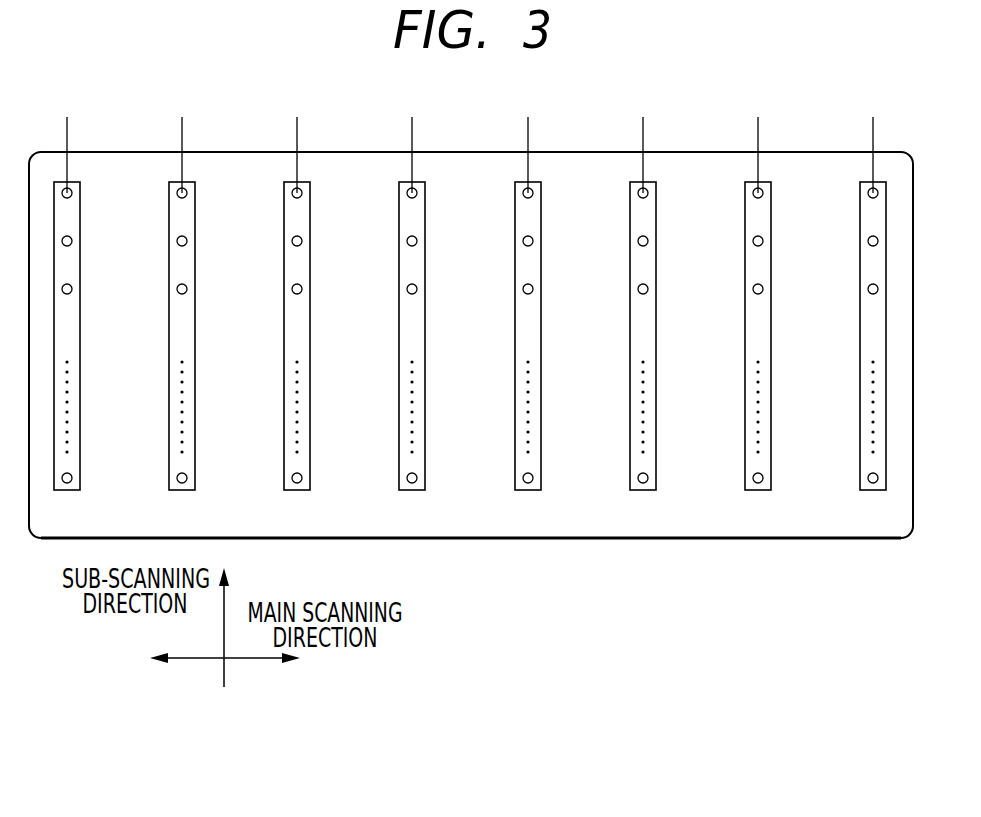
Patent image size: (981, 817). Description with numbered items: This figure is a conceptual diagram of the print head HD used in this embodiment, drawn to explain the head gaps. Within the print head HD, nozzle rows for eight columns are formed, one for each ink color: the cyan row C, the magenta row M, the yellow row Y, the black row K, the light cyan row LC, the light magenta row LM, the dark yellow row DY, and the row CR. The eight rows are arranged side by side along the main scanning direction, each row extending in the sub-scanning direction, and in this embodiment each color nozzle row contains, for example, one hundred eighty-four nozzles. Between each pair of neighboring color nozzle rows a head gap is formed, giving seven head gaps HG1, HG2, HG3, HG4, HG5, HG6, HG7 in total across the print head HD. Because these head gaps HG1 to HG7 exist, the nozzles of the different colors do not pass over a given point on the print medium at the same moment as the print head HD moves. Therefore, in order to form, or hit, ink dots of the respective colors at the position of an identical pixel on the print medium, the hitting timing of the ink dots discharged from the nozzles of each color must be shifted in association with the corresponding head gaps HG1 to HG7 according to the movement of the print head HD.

The print head HD is at (692, 537).
The cyan nozzle row C is at (67, 322).
The magenta nozzle row M is at (182, 322).
The yellow nozzle row Y is at (297, 322).
The black nozzle row K is at (412, 322).
The light cyan nozzle row LC is at (528, 322).
The light magenta nozzle row LM is at (643, 322).
The dark yellow nozzle row DY is at (758, 322).
The CR nozzle row CR is at (873, 322).
The head gap HG1 is at (124, 116).
The head gap HG2 is at (239, 116).
The head gap HG3 is at (354, 116).
The head gap HG4 is at (469, 116).
The head gap HG5 is at (585, 116).
The head gap HG6 is at (700, 116).
The head gap HG7 is at (893, 128).